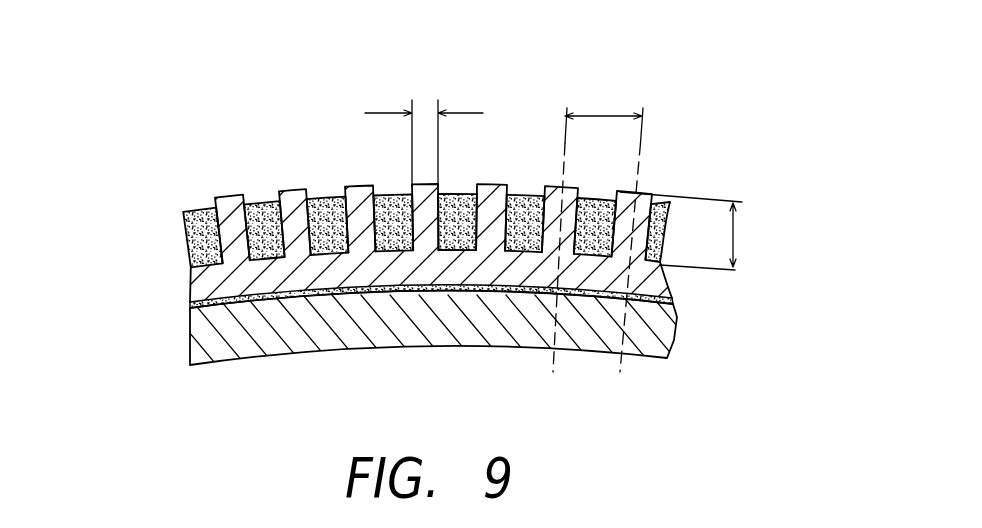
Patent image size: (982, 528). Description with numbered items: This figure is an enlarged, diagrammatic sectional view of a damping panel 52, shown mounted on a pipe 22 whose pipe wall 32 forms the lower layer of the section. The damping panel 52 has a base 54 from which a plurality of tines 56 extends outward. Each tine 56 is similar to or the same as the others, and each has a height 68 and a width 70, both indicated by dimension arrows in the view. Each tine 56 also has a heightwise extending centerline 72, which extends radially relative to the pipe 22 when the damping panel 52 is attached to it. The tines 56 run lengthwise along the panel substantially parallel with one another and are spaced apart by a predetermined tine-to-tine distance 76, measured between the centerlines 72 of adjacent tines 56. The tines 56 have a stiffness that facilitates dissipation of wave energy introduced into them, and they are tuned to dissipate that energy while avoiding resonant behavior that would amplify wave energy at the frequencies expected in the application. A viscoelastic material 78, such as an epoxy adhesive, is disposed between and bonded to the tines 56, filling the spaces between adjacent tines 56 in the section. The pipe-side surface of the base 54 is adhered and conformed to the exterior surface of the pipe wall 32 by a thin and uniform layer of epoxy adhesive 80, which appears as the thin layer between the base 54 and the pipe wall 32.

The pipe 22 is at (416, 374).
The pipe wall 32 is at (222, 335).
The damping panel 52 is at (431, 251).
The base 54 is at (425, 205).
The tines 56 is at (355, 187).
The height 68 is at (735, 235).
The width 70 is at (395, 112).
The heightwise extending centerline 72 is at (638, 156).
The tine-to-tine distance 76 is at (638, 210).
The viscoelastic material 78 is at (262, 200).
The epoxy adhesive 80 is at (188, 300).